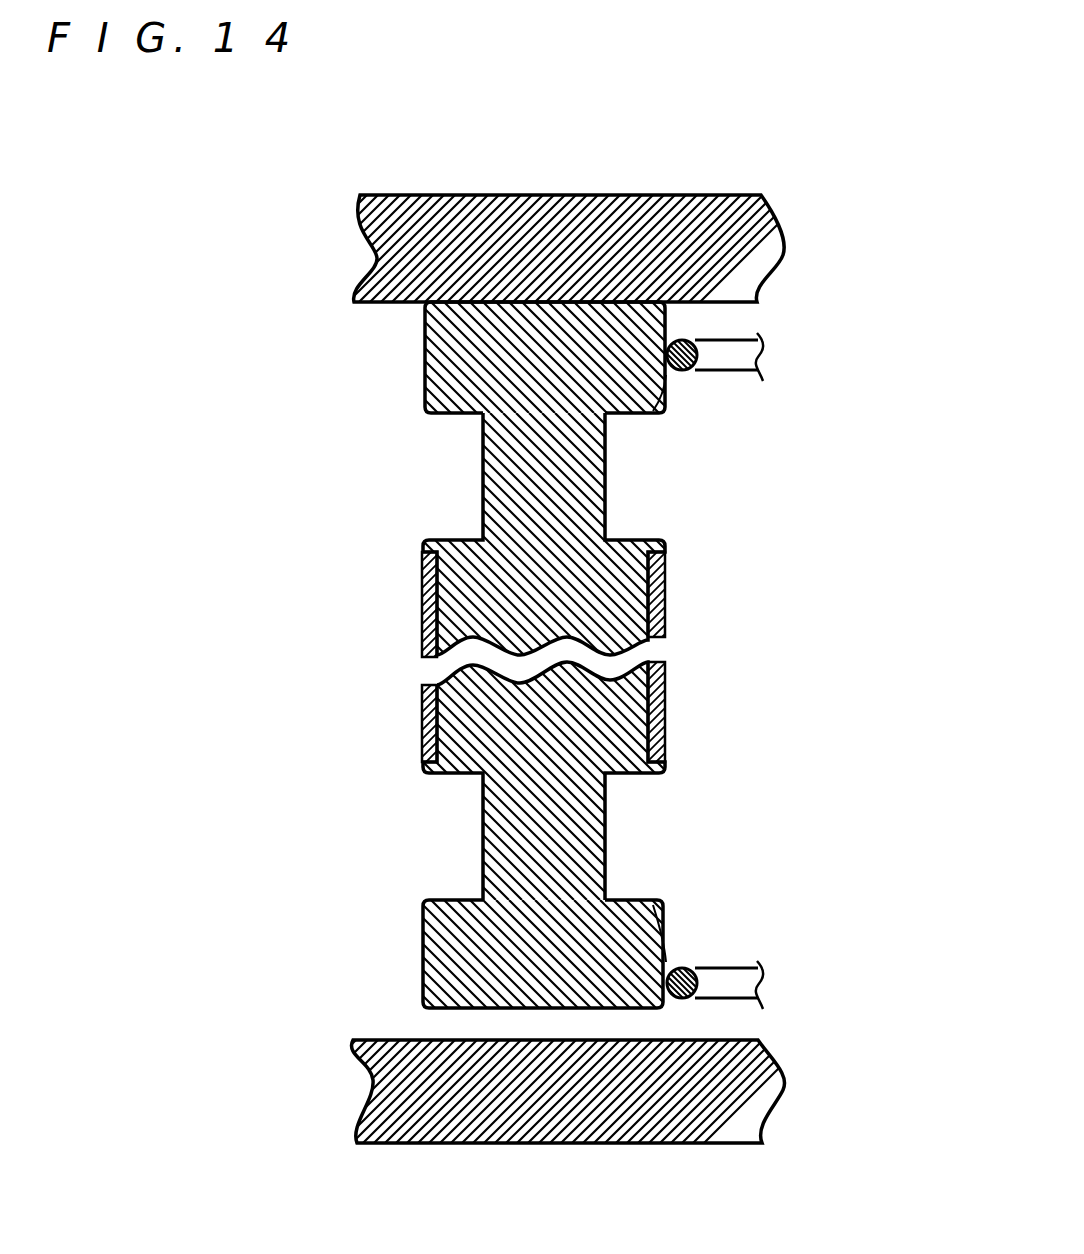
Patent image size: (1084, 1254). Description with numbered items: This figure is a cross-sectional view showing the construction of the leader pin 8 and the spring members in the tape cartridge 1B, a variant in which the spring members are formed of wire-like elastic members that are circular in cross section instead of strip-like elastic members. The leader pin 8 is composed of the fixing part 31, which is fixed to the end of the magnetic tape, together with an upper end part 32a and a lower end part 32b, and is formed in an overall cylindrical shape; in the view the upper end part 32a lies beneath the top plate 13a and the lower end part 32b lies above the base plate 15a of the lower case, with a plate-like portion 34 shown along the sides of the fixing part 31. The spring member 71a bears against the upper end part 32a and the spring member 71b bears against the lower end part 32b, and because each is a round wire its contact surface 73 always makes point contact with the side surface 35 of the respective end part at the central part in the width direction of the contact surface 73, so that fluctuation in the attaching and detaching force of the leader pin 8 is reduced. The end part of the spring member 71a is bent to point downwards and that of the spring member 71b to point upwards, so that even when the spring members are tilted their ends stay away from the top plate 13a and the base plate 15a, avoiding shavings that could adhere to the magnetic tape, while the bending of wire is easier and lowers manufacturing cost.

The tape cartridge 1B is at (258, 197).
The top plate 13a is at (374, 268).
The base plate 15a is at (373, 1080).
The upper end part 32a is at (423, 359).
The lower end part 32b is at (423, 966).
The fixing part 31 is at (440, 543).
The sliding plate 34 is at (423, 722).
The side surfaces 35 is at (667, 398).
The contact surfaces 73 is at (665, 398).
The spring member 71a is at (750, 355).
The spring member 71b is at (748, 983).
The leader pin 8 is at (306, 591).